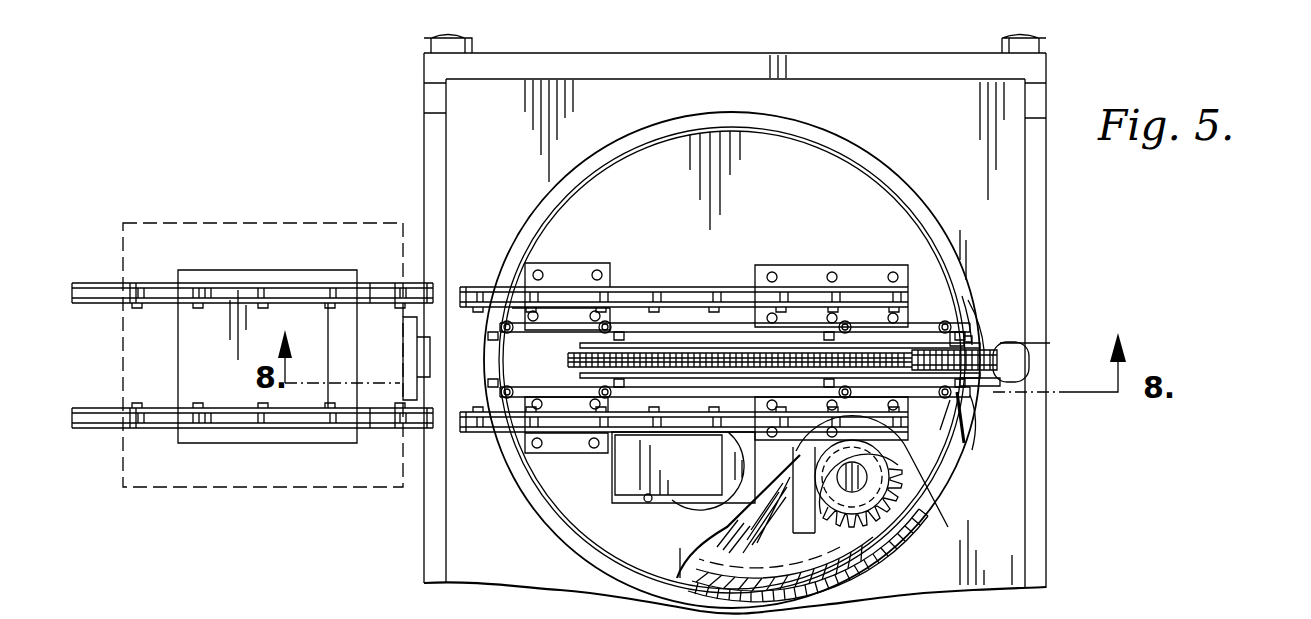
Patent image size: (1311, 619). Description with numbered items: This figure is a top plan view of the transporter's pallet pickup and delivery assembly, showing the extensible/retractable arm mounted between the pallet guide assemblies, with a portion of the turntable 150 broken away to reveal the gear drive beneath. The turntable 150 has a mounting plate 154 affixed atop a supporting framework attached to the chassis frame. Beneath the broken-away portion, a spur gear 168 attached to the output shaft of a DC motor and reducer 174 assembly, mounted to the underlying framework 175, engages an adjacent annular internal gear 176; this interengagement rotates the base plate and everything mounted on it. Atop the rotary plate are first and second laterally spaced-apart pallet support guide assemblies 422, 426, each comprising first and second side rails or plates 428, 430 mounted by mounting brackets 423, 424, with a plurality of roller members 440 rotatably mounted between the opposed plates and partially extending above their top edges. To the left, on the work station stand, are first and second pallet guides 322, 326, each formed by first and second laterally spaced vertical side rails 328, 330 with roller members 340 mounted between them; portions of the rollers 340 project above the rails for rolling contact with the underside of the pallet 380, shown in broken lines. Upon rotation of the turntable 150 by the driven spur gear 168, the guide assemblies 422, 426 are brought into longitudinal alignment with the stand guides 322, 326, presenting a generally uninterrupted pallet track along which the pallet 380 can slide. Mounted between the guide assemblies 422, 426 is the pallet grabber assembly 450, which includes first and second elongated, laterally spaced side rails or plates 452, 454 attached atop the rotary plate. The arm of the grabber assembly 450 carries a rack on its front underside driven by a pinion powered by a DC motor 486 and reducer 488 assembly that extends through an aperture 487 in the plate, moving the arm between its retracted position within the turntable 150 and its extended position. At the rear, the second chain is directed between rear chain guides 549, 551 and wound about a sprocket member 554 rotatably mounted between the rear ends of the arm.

The rotary turntable 150 is at (838, 130).
The mounting plate 154 is at (735, 324).
The pallet 380 is at (258, 222).
The roller members 340 is at (137, 288).
The second side rail 330 is at (160, 278).
The first side rail 328 is at (160, 304).
The second pallet guide 326 is at (383, 286).
The first pallet guide 322 is at (383, 434).
The second pallet support guide assembly 426 is at (482, 288).
The first pallet support guide assembly 422 is at (482, 438).
The mounting bracket 423 is at (565, 263).
The mounting bracket 424 is at (820, 265).
The second side plate 430 is at (628, 290).
The first side plate 428 is at (563, 323).
The roller members 440 is at (657, 293).
The rear chain guide 551 is at (1023, 340).
The rear chain guide 549 is at (1005, 383).
The sprocket member 554 is at (968, 330).
The second side plate 454 is at (968, 302).
The first side plate 452 is at (972, 420).
The pallet grabber assembly 450 is at (1028, 330).
The reducer 488 is at (683, 467).
The DC motor 486 is at (740, 462).
The aperture 487 is at (647, 502).
The spur gear 168 is at (890, 470).
The annular internal gear 176 is at (880, 556).
The reducer 174 is at (817, 523).
The framework 175 is at (750, 528).